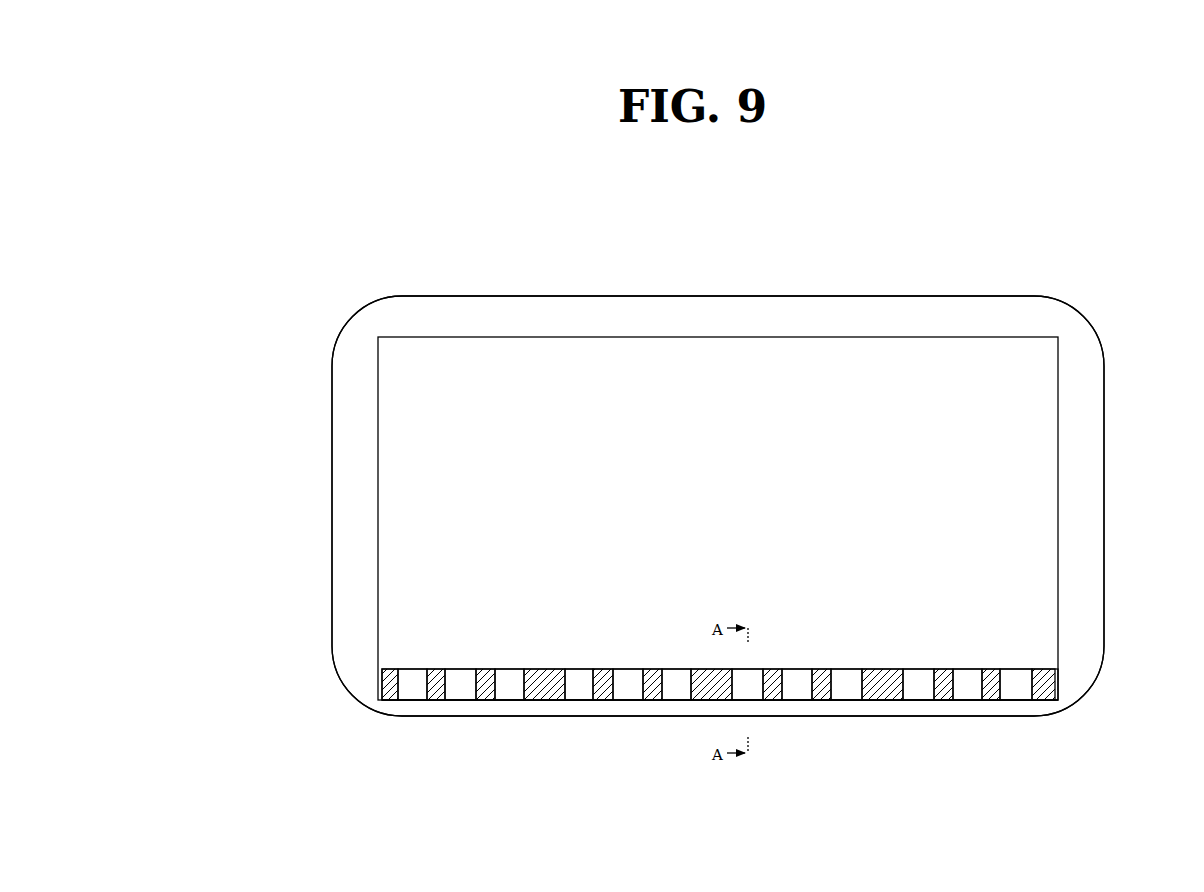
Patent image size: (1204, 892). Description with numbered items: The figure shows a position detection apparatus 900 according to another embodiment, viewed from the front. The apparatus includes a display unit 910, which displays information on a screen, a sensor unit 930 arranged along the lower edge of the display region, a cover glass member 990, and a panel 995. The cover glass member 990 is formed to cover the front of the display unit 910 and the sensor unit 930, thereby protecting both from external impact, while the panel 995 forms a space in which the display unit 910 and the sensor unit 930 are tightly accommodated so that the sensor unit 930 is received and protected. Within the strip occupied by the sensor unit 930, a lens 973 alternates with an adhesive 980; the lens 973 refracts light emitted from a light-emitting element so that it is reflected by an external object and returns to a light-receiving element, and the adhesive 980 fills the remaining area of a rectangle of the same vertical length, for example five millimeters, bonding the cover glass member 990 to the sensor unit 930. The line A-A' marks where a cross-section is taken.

The position detection apparatus 900 is at (726, 284).
The display unit 910 is at (378, 400).
The sensor unit 930 is at (382, 669).
The lens 973 is at (413, 688).
The adhesive 980 is at (543, 688).
The cover glass member 990 is at (1022, 468).
The panel 995 is at (637, 700).